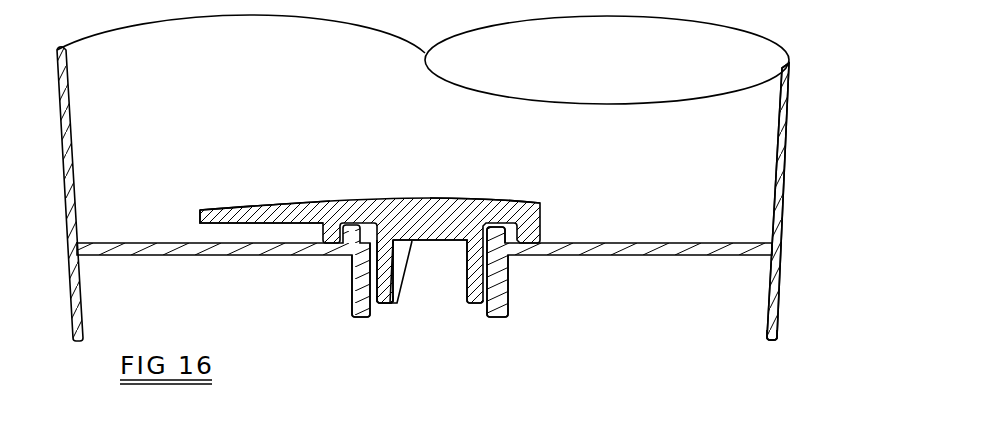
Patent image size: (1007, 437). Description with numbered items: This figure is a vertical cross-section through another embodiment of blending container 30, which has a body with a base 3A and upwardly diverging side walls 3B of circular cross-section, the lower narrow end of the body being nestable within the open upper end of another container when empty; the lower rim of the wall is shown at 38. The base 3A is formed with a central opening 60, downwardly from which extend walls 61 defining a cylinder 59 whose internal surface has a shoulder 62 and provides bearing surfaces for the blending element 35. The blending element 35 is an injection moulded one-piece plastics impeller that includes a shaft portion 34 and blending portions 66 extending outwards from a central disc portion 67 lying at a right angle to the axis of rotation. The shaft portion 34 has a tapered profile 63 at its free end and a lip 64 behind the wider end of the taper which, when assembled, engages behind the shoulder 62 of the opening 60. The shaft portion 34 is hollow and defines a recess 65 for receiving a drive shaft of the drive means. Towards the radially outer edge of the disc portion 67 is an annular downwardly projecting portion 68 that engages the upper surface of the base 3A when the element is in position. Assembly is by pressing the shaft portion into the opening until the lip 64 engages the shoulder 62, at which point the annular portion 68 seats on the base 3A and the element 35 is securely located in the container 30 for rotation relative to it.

The blending container 30 is at (795, 220).
The base 3A is at (583, 258).
The side walls 3B is at (791, 108).
The lower rim of side wall 38 is at (776, 297).
The blending element 35 is at (553, 195).
The shaft portion 34 is at (382, 280).
The blending portions 66 is at (224, 210).
The central disc portion 67 is at (512, 203).
The lip 64 is at (442, 280).
The annular downwardly projecting portion 68 is at (526, 232).
The shoulder 62 is at (355, 292).
The walls 61 is at (505, 300).
The cylinder 59 is at (378, 306).
The tapered profile 63 is at (391, 304).
The recess 65 is at (428, 280).
The central opening 60 is at (452, 325).